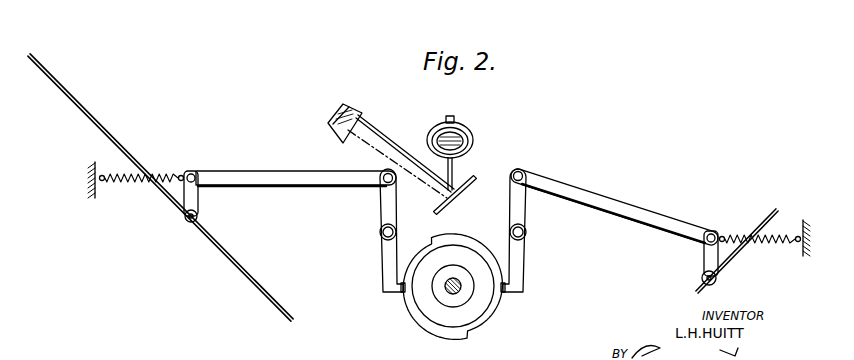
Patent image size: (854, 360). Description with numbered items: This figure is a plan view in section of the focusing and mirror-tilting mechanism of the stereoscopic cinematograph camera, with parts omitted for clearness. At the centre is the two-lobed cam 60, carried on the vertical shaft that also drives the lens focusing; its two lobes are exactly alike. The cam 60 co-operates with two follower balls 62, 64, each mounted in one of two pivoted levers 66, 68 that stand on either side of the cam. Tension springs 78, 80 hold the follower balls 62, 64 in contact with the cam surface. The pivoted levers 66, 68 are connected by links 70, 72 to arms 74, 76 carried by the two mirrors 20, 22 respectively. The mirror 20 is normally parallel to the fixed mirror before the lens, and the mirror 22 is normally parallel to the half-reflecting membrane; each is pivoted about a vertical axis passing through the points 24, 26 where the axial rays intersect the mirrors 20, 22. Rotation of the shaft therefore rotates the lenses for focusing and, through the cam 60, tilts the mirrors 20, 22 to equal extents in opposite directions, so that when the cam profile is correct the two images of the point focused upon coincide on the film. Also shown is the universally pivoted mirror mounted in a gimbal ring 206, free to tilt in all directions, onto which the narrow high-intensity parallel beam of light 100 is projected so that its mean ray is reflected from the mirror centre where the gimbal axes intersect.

The mirror 20 is at (113, 141).
The mirror 22 is at (769, 216).
The point 24 is at (198, 214).
The point 26 is at (703, 272).
The two-lobed cam 60 is at (472, 322).
The follower ball 62 is at (405, 285).
The follower ball 64 is at (503, 294).
The pivoted lever 66 is at (388, 254).
The pivoted lever 68 is at (522, 252).
The link 70 is at (228, 170).
The link 72 is at (606, 206).
The arm 74 is at (188, 200).
The arm 76 is at (718, 259).
The tension spring 78 is at (134, 183).
The tension spring 80 is at (772, 245).
The parallel beam of light 100 is at (368, 137).
The gimbal ring 206 is at (470, 144).